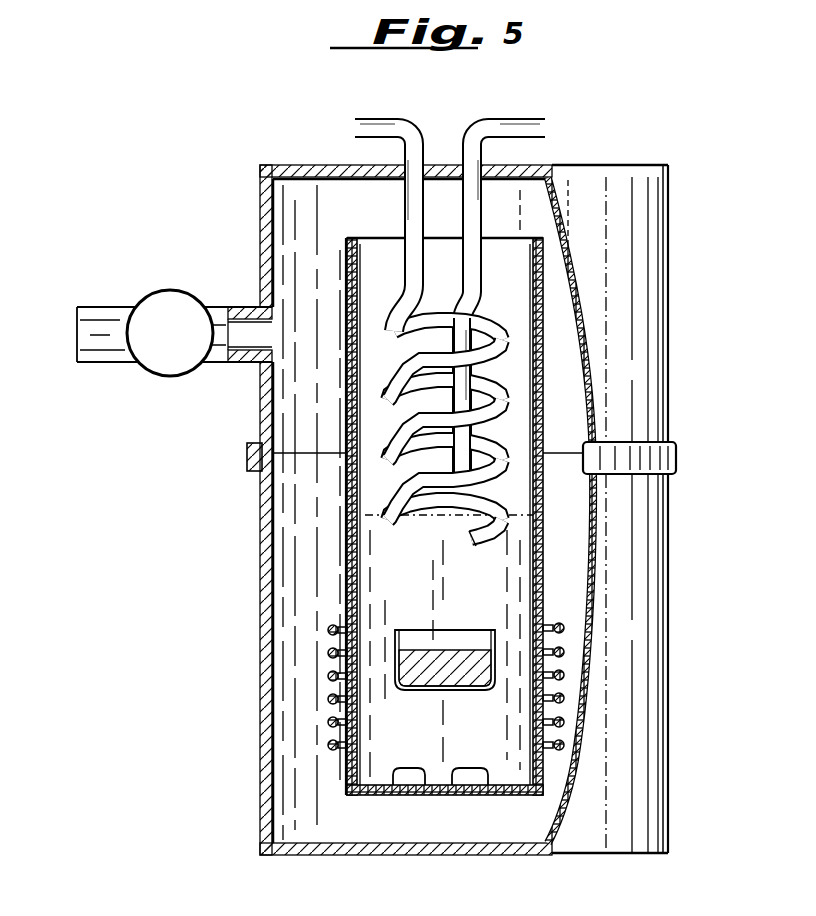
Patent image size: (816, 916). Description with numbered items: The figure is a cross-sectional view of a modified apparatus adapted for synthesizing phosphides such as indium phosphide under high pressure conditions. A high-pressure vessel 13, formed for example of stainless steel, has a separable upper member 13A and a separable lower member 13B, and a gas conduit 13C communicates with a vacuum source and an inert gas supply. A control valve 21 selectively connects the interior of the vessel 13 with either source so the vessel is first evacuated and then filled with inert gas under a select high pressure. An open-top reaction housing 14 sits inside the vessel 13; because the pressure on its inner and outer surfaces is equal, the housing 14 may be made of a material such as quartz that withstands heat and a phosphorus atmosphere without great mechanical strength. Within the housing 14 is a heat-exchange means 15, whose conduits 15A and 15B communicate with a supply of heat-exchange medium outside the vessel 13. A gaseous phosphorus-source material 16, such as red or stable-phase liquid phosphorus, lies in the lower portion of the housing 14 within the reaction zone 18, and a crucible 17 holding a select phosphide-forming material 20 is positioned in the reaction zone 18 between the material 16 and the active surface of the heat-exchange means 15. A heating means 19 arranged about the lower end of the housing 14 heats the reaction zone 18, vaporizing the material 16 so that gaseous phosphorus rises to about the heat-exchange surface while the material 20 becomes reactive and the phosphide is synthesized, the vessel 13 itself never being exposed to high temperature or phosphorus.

The high-pressure vessel 13 is at (668, 498).
The upper member 13A is at (668, 335).
The lower member 13B is at (668, 672).
The gas conduit 13C is at (232, 365).
The reaction housing 14 is at (548, 512).
The heat-exchange means 15 is at (470, 552).
The conduit 15A is at (362, 122).
The conduit 15B is at (533, 122).
The gaseous phosphorus-source material 16 is at (410, 780).
The crucible 17 is at (480, 692).
The reaction zone 18 is at (322, 600).
The heating means 19 is at (327, 700).
The phosphide-forming material 20 is at (454, 668).
The control valve 21 is at (166, 377).